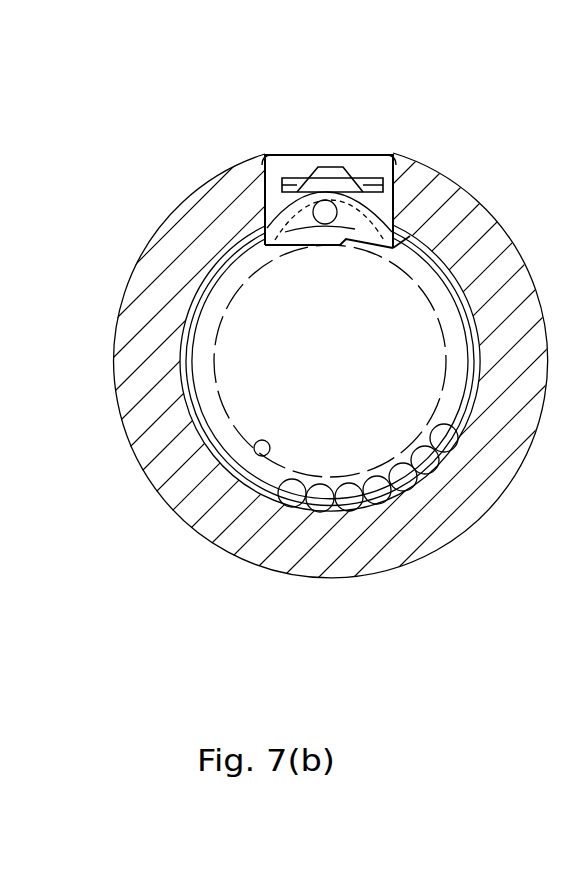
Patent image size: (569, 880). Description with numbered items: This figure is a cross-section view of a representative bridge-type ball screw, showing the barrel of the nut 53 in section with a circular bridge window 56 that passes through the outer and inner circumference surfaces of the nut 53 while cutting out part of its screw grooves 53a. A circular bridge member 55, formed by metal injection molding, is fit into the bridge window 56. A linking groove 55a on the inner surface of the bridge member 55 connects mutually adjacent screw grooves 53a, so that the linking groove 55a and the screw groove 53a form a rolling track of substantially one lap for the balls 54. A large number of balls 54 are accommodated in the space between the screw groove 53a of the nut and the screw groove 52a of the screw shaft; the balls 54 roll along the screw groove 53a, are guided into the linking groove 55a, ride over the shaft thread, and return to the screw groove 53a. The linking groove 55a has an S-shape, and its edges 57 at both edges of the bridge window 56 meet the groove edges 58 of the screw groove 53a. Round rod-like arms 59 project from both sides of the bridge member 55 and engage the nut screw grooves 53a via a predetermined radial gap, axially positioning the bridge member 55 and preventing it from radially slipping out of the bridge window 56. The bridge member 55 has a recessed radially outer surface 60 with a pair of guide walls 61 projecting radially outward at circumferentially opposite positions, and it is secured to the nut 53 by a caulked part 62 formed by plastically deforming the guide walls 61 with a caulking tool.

The screw groove of screw shaft 52a is at (218, 398).
The nut 53 is at (120, 308).
The screw grooves 53a is at (266, 455).
The balls 54 is at (360, 482).
The bridge member 55 is at (262, 203).
The linking groove 55a is at (390, 172).
The bridge window 56 is at (289, 178).
The edges of the linking groove 57 is at (300, 228).
The groove edges 58 is at (264, 246).
The arms 59 is at (408, 237).
The recessed radially outer surface 60 is at (375, 185).
The guide walls 61 is at (280, 168).
The caulked part 62 is at (266, 156).